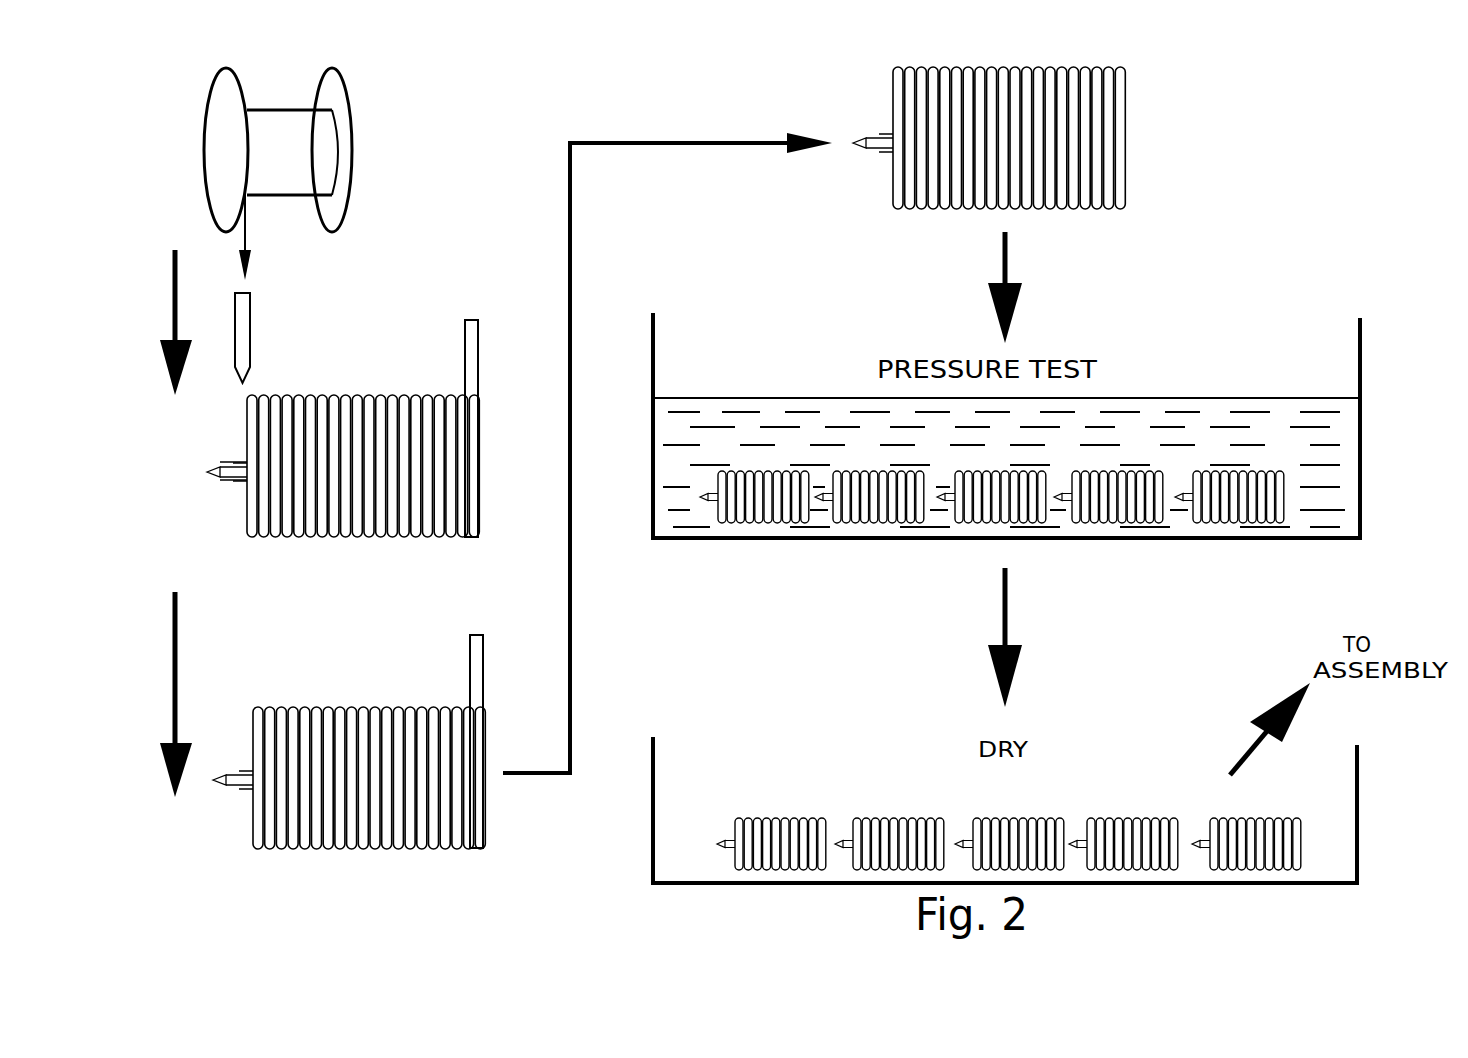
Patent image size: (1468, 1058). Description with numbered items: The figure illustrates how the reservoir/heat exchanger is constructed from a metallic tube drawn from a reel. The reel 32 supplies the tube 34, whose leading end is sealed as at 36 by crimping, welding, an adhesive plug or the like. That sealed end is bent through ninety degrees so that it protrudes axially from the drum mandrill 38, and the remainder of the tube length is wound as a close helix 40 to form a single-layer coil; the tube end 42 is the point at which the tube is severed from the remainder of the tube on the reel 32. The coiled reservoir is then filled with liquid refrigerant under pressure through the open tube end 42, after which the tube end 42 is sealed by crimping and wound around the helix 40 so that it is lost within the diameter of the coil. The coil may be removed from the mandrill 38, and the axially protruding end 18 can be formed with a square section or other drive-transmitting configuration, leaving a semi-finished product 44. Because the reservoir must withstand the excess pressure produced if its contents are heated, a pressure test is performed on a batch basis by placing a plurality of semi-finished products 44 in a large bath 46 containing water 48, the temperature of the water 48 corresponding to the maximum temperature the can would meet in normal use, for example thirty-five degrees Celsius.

The axially protruding end 18 is at (247, 485).
The reel 32 is at (352, 132).
The tube 34 is at (243, 240).
The sealed leading end 36 is at (250, 370).
The drum mandrill 38 is at (224, 452).
The close helix 40 is at (355, 395).
The tube end 42 is at (478, 350).
The semi-finished product 44 is at (1160, 137).
The bath 46 is at (1363, 350).
The water 48 is at (1222, 398).